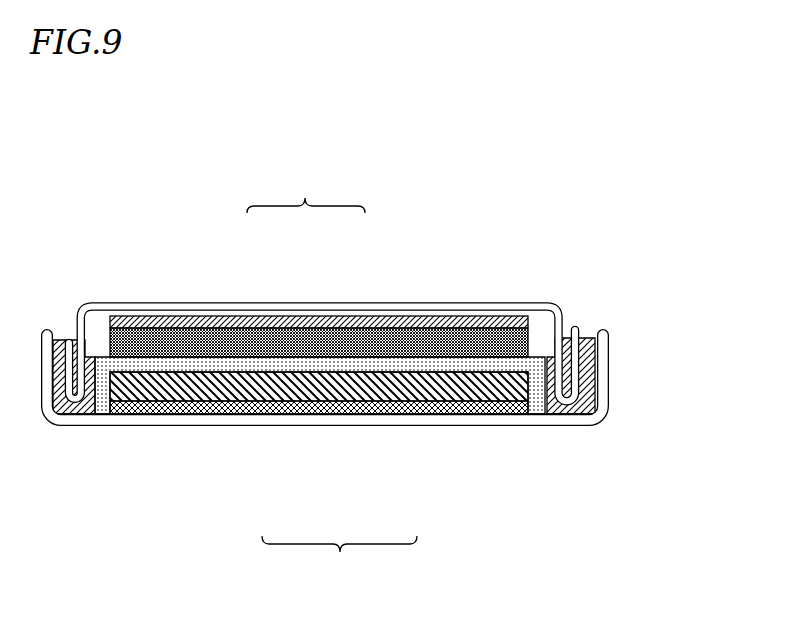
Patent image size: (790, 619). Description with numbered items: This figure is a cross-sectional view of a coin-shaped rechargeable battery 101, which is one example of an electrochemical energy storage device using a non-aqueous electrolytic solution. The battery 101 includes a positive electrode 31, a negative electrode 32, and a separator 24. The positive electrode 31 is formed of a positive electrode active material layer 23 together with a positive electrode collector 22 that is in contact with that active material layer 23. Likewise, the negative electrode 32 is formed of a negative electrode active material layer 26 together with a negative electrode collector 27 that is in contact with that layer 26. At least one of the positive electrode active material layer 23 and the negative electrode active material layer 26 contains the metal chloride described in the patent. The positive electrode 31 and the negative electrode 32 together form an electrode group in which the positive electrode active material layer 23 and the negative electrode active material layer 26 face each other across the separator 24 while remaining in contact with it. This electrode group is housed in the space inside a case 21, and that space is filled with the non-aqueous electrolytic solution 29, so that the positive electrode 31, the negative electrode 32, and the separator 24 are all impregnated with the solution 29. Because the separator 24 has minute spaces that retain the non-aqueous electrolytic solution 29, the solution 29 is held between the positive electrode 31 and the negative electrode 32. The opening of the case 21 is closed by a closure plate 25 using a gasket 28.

The coin-shaped rechargeable battery 101 is at (654, 196).
The case 21 is at (160, 416).
The positive electrode collector 22 is at (284, 408).
The positive electrode active material layer 23 is at (448, 412).
The separator 24 is at (496, 360).
The closure plate 25 is at (128, 310).
The negative electrode active material layer 26 is at (243, 350).
The negative electrode collector 27 is at (378, 317).
The gasket 28 is at (583, 422).
The non-aqueous electrolytic solution 29 is at (545, 333).
The positive electrode 31 is at (339, 563).
The negative electrode 32 is at (306, 192).